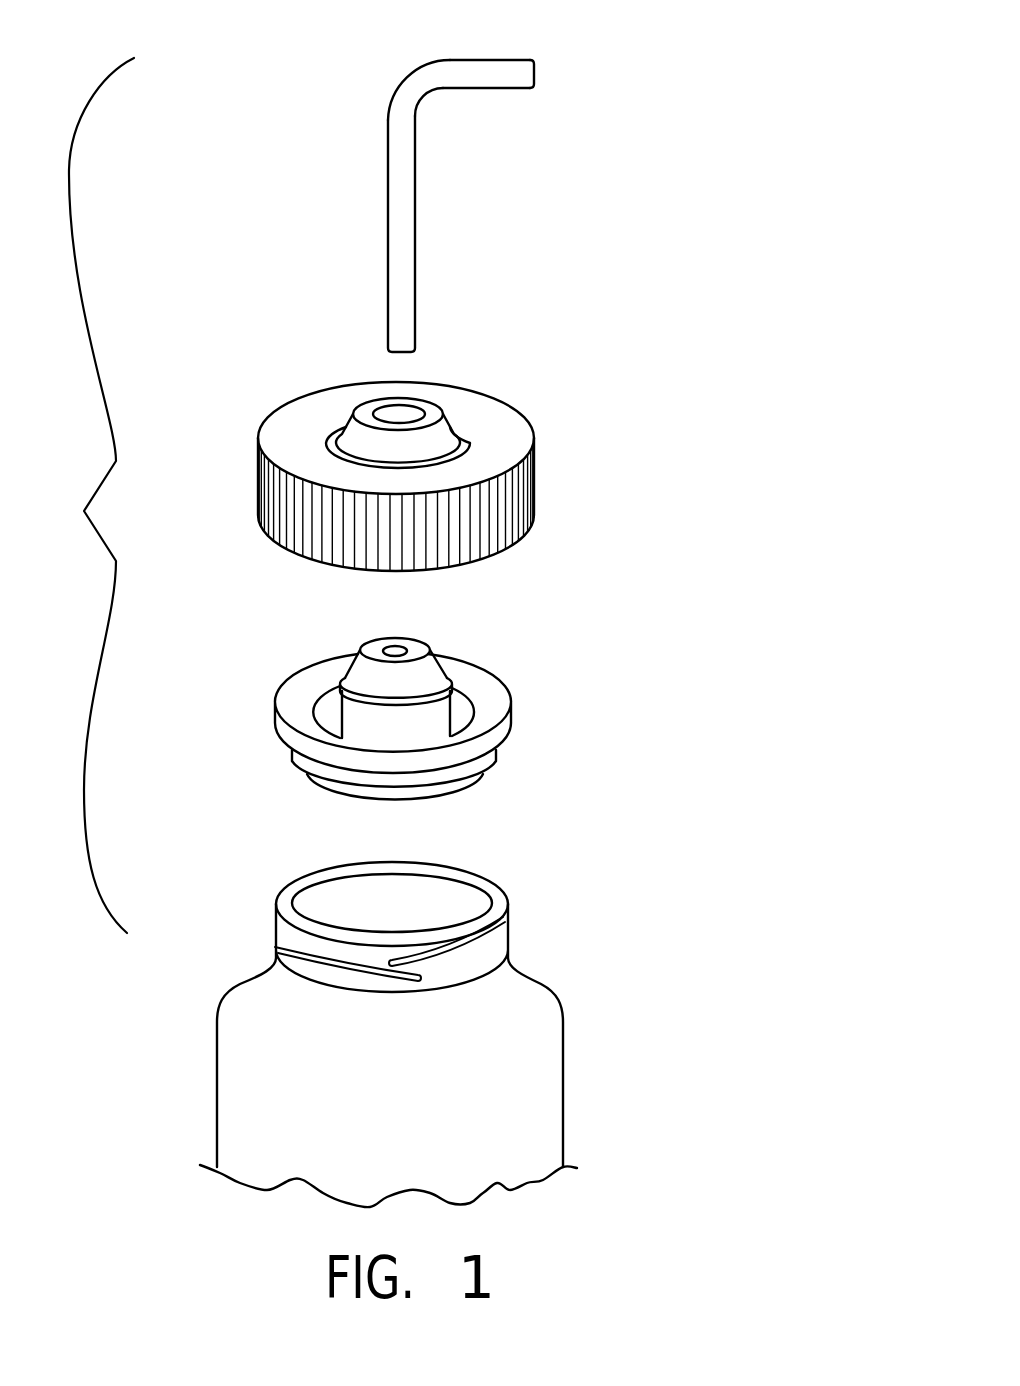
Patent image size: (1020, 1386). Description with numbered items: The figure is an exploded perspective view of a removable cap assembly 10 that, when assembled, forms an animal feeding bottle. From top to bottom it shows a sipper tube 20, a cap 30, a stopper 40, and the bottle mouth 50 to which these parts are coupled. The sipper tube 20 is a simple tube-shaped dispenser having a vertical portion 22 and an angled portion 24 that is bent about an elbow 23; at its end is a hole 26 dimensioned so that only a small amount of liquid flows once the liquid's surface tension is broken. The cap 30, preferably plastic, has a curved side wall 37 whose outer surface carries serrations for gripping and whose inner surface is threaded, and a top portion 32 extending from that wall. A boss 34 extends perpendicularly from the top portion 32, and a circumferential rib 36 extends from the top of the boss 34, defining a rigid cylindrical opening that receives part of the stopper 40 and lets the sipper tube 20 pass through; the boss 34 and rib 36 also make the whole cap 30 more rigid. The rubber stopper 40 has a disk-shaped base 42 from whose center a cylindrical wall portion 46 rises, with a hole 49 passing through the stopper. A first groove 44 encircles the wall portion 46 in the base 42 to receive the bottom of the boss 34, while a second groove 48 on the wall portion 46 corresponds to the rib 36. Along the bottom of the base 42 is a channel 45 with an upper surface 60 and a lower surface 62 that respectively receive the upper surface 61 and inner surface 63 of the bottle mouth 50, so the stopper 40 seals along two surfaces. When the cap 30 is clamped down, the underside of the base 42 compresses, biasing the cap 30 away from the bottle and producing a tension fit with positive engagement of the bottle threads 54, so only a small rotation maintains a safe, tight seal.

The removable cap assembly 10 is at (84, 495).
The sipper tube 20 is at (340, 179).
The vertical portion 22 is at (403, 280).
The elbow 23 is at (408, 103).
The angled portion 24 is at (483, 68).
The hole 26 is at (535, 72).
The cap 30 is at (507, 400).
The top portion 32 is at (503, 443).
The boss 34 is at (357, 437).
The circumferential rib 36 is at (383, 403).
The curved side wall 37 is at (500, 517).
The stopper 40 is at (483, 682).
The disk-shaped base 42 is at (480, 735).
The first groove 44 is at (468, 711).
The channel 45 is at (358, 665).
The cylindrical wall portion 46 is at (357, 717).
The second groove 48 is at (347, 660).
The hole 49 is at (393, 650).
The bottle mouth 50 is at (602, 992).
The threads 54 is at (485, 943).
The upper surface 60 is at (502, 757).
The upper surface 61 is at (290, 895).
The lower surface 62 is at (473, 788).
The inner surface 63 is at (305, 913).